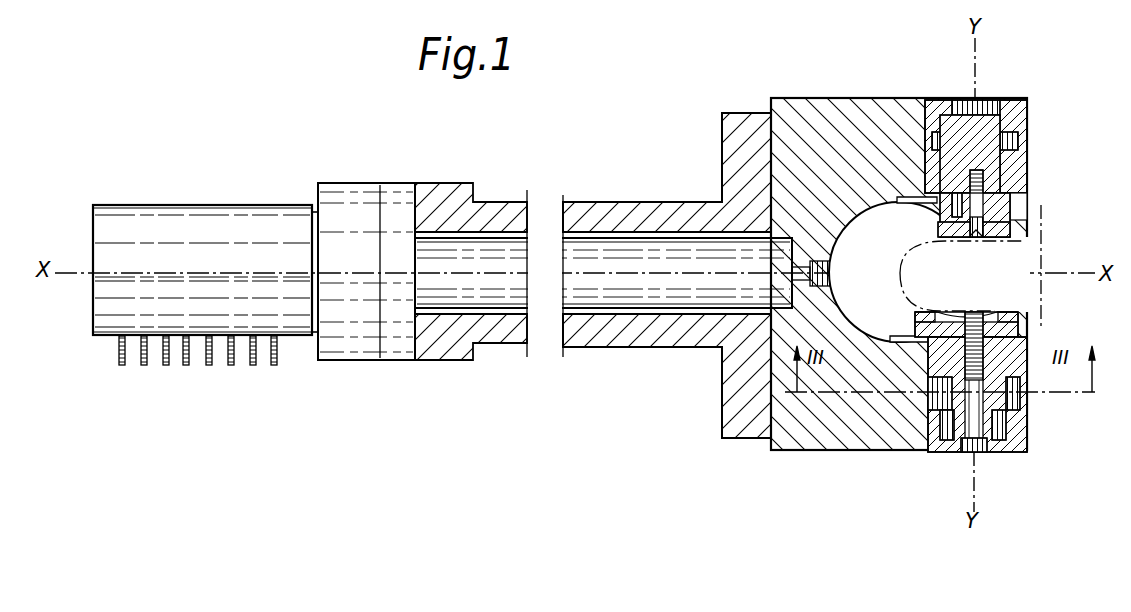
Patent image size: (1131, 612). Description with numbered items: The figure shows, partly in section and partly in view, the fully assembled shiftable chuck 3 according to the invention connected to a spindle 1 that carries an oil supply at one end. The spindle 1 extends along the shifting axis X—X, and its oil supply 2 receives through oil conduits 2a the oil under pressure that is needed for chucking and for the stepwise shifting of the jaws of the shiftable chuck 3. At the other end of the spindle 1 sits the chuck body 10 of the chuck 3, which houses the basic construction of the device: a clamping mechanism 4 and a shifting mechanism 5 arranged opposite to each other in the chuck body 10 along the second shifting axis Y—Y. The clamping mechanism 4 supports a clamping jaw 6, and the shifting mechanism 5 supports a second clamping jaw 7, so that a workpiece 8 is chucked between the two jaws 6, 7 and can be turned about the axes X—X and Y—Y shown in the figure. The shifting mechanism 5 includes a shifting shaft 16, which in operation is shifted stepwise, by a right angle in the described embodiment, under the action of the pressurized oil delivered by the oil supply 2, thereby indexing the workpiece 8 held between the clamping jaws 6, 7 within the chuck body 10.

The spindle 1 is at (572, 327).
The oil supply 2 is at (176, 207).
The oil conduits 2a is at (122, 366).
The shiftable chuck 3 is at (922, 92).
The clamping mechanism 4 is at (988, 150).
The shifting mechanism 5 is at (1012, 420).
The clamping jaw 6 is at (1000, 223).
The clamping jaw 7 is at (1005, 327).
The workpiece 8 is at (1005, 268).
The chuck body 10 is at (820, 108).
The shifting shaft 16 is at (950, 408).